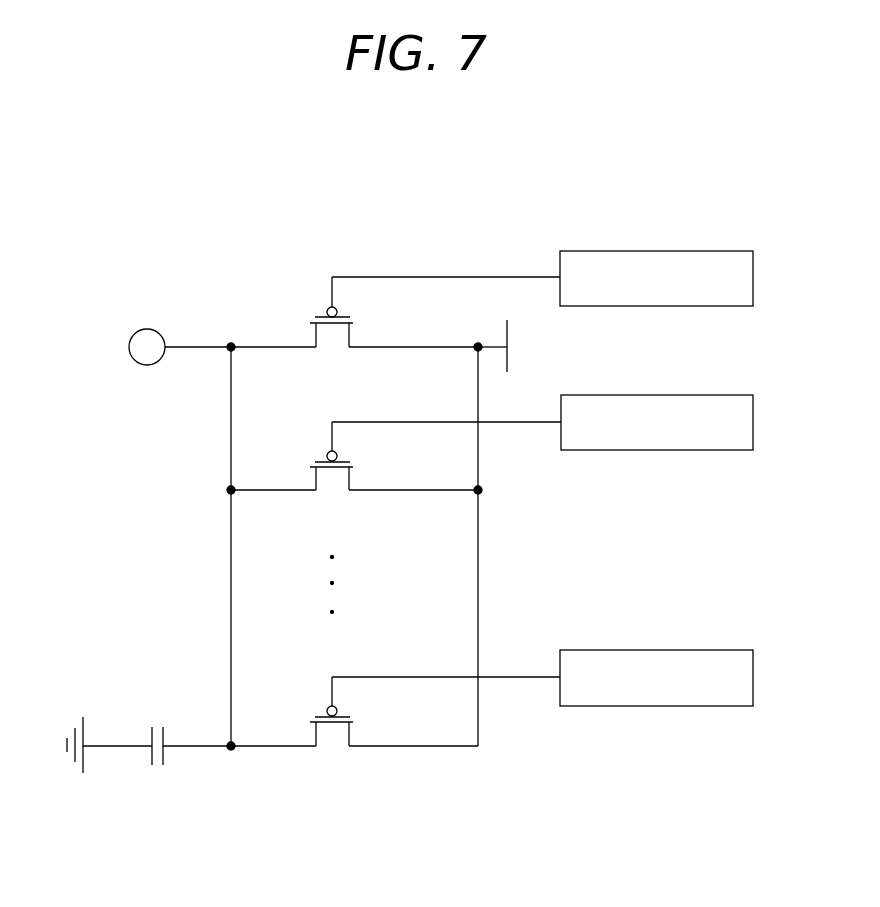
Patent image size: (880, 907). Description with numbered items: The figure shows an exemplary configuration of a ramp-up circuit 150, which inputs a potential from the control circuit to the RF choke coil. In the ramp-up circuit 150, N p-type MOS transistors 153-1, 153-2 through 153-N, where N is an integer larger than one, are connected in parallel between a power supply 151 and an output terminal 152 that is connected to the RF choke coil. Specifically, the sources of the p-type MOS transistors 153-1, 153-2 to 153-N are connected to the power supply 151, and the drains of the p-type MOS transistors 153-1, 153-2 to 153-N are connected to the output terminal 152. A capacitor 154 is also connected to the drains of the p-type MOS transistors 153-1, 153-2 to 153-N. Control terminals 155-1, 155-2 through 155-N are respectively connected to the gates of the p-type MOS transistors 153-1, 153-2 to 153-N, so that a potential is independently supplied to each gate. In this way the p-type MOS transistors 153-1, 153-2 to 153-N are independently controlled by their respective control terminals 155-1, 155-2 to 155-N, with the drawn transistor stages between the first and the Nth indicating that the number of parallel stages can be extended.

The ramp-up circuit 150 is at (447, 813).
The power supply 151 is at (509, 350).
The output terminal 152 is at (147, 329).
The p-type MOS transistor 153-1 is at (352, 334).
The p-type MOS transistor 153-2 is at (352, 478).
The p-type MOS transistor 153-N is at (352, 734).
The capacitor 154 is at (149, 766).
The control terminal 155-1 is at (658, 250).
The control terminal 155-2 is at (658, 394).
The control terminal 155-N is at (658, 649).